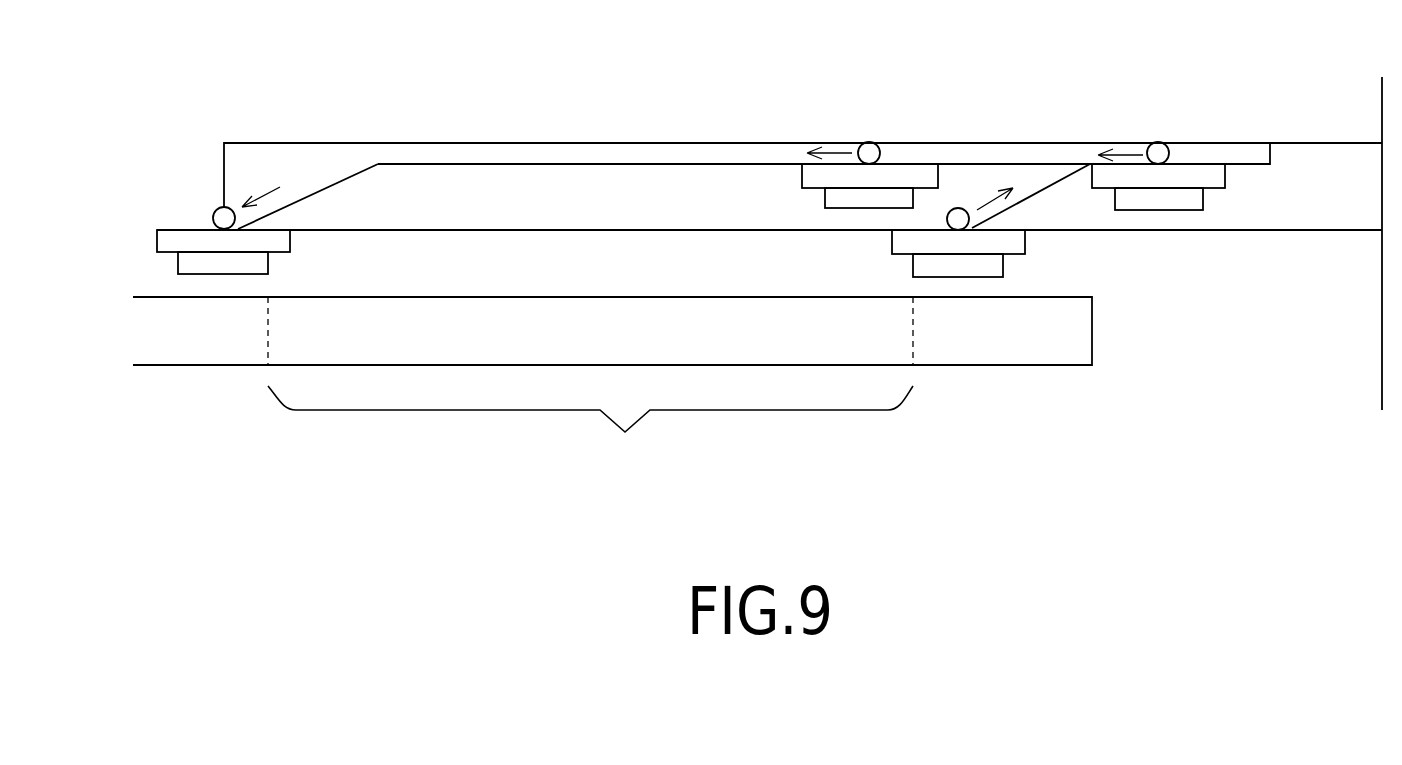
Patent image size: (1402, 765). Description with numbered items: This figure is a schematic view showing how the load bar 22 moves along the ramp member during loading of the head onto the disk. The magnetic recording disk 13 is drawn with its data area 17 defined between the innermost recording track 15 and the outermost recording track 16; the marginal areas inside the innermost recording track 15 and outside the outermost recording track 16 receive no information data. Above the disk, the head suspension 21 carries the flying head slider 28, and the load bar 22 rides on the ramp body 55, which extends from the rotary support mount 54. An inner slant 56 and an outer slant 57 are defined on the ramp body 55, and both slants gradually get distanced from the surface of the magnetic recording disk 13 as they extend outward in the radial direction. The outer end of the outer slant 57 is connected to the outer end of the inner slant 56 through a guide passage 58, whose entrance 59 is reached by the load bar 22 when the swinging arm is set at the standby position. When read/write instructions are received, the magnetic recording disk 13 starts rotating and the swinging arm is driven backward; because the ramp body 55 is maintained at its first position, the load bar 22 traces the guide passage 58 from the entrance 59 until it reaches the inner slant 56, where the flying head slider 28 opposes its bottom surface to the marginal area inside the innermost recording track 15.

The magnetic recording disk 13 is at (1092, 342).
The innermost recording track 15 is at (268, 297).
The outermost recording track 16 is at (913, 298).
The data area 17 is at (590, 429).
The head suspension 21 is at (157, 243).
The load bar 22 is at (215, 208).
The flying head slider 28 is at (268, 265).
The rotary support mount 54 is at (1382, 98).
The ramp body 55 is at (458, 141).
The inner slant 56 is at (330, 182).
The outer slant 57 is at (1037, 193).
The guide passage 58 is at (607, 162).
The entrance 59 is at (1240, 164).